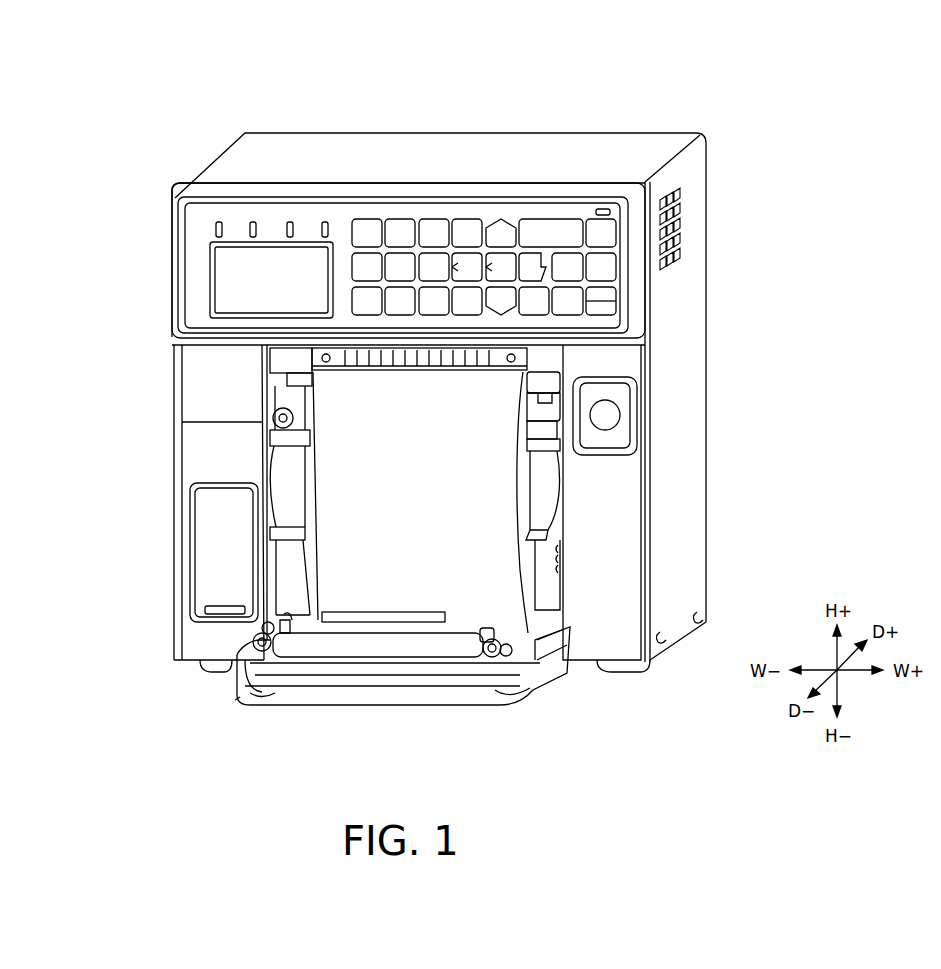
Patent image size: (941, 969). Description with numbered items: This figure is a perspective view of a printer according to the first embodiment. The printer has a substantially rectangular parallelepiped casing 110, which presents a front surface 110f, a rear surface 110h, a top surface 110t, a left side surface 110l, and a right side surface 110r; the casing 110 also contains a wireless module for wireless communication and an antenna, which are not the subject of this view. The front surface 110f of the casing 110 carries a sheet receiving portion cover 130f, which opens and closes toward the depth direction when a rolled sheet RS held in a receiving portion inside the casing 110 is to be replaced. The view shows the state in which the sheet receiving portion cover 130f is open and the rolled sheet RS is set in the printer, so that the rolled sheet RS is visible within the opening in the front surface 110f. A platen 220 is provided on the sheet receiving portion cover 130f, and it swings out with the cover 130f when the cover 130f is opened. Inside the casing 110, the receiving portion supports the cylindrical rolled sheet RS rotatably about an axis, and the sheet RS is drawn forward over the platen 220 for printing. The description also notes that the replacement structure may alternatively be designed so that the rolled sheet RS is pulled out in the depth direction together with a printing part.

The casing 110 is at (423, 118).
The top surface 110t is at (475, 155).
The rear surface 110h is at (707, 280).
The right side surface 110r is at (686, 411).
The left side surface 110l is at (170, 298).
The front surface 110f is at (207, 371).
The platen 220 is at (345, 648).
The sheet receiving portion cover 130f is at (380, 690).
The rolled sheet RS is at (450, 517).